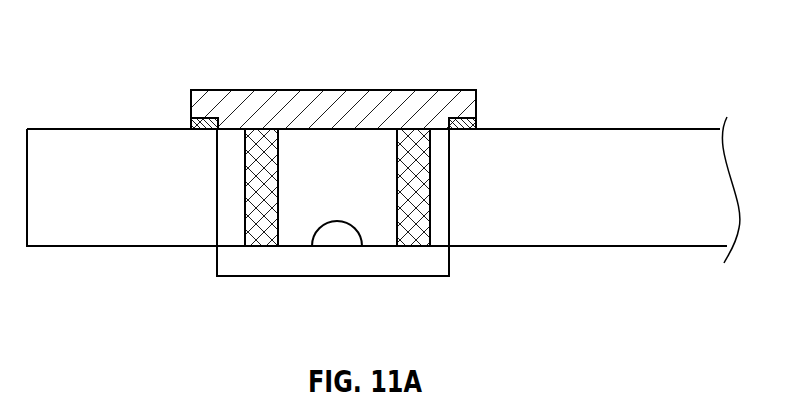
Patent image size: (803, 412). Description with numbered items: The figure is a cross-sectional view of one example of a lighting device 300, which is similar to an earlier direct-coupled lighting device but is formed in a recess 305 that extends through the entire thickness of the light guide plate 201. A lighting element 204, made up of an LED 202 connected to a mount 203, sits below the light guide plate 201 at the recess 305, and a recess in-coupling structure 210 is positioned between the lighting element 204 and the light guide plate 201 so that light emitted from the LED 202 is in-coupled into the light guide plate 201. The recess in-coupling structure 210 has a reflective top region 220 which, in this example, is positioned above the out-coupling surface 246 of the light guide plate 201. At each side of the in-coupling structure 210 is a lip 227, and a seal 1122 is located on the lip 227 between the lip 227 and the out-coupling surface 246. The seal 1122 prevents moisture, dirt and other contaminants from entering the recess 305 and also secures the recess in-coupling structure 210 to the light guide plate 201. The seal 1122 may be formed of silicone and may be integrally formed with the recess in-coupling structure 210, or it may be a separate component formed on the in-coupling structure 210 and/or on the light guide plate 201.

The lighting device 300 is at (80, 33).
The light guide plate 201 is at (622, 140).
The out-coupling surface 246 is at (68, 128).
The recess 305 is at (449, 210).
The LED 202 is at (344, 234).
The mount 203 is at (289, 261).
The lighting element 204 is at (423, 278).
The lip 227 is at (230, 132).
The recess in-coupling structure 210 is at (262, 100).
The reflective top region 220 is at (322, 105).
The seal 1122 is at (193, 124).